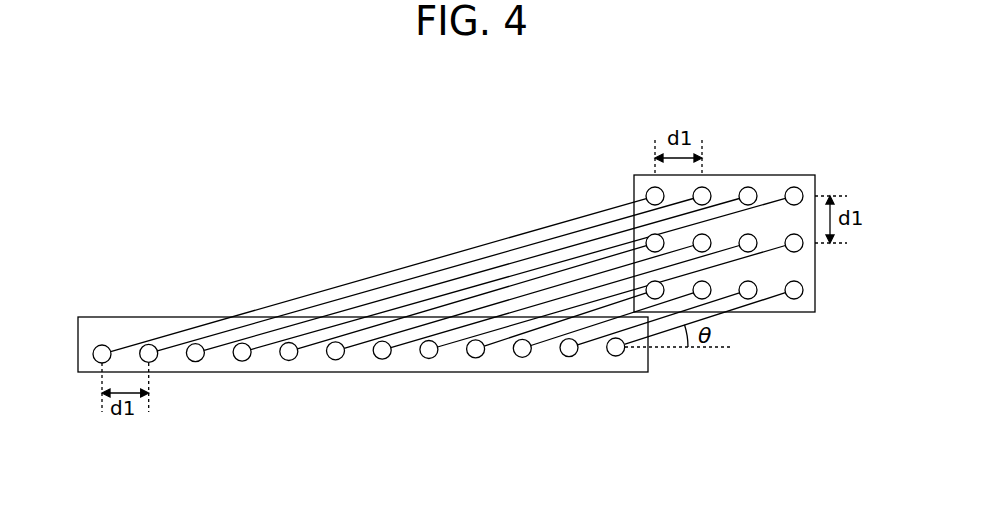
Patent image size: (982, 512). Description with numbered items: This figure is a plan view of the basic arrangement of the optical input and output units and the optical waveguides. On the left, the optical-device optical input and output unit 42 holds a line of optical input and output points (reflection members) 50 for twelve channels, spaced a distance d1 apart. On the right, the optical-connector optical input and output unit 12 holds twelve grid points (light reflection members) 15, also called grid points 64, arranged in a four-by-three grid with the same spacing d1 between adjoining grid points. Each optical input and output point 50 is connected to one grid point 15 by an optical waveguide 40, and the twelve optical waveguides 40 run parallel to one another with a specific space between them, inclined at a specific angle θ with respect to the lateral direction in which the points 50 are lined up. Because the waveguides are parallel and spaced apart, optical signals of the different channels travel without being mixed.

The optical-connector optical input and output unit 12 is at (730, 175).
The grid point (light reflection member) 15 is at (744, 211).
The grid point 64 is at (755, 190).
The optical waveguide 40 is at (372, 278).
The optical-device optical input and output unit 42 is at (360, 372).
The optical input and output point (reflection member) 50 is at (431, 358).